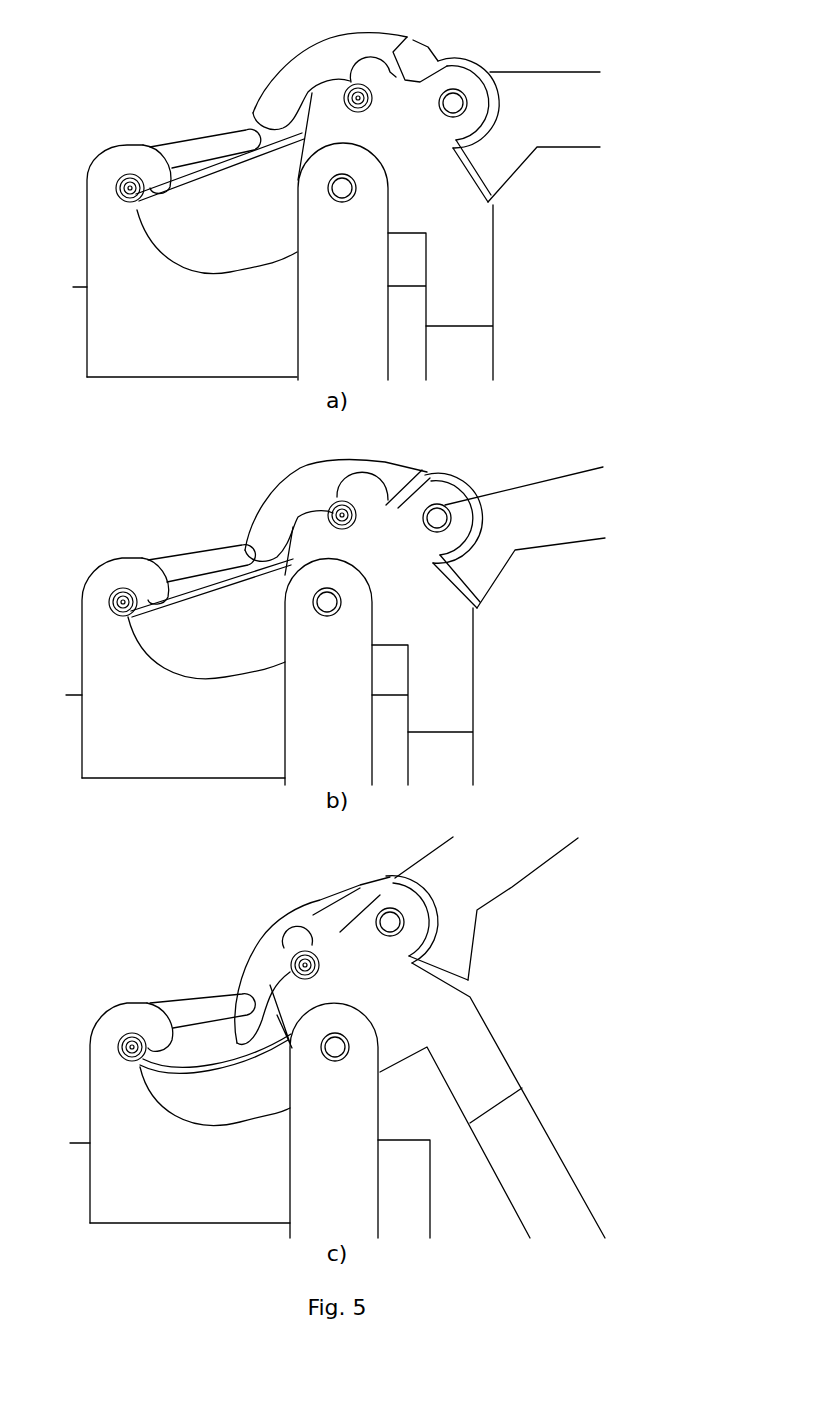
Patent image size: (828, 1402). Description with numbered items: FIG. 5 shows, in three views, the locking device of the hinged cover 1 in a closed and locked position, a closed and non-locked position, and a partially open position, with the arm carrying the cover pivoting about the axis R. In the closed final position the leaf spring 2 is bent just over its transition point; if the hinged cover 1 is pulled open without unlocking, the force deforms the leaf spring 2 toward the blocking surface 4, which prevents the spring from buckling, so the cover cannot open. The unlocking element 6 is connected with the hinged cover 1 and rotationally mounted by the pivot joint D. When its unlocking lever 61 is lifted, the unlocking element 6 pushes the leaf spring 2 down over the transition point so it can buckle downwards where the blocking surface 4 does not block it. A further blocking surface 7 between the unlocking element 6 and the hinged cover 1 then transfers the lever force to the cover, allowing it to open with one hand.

The hinged cover 1 is at (447, 745).
The leaf spring 2 is at (188, 593).
The blocking surface 4 is at (170, 567).
The unlocking element 6 is at (242, 540).
The blocking surface 7 is at (358, 492).
The unlocking lever 61 is at (545, 537).
The pivot joint D is at (415, 518).
The pivot axis R is at (337, 608).